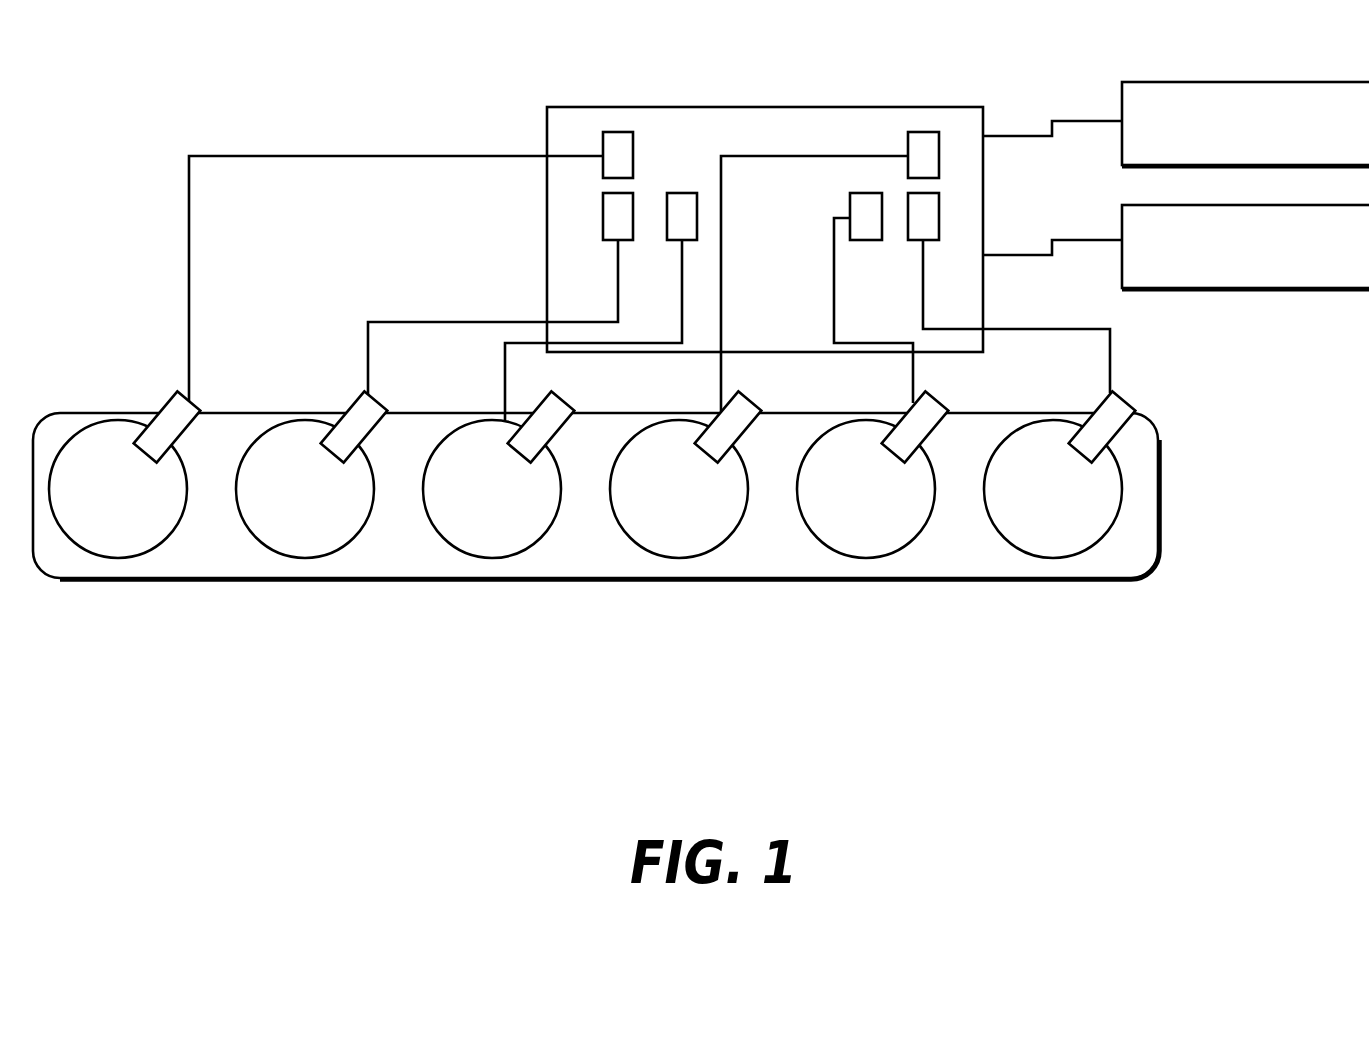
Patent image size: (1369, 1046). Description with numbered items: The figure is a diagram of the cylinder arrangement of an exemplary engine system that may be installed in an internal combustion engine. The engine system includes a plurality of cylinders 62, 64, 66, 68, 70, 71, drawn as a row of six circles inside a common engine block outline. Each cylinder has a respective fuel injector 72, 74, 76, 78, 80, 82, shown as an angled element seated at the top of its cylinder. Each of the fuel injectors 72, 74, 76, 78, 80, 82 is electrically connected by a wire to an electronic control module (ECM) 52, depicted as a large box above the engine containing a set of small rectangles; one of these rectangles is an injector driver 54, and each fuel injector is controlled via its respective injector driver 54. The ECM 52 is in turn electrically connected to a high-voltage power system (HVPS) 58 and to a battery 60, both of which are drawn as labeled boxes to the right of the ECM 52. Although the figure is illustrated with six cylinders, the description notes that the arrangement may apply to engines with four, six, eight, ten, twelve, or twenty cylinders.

The electronic control module 52 is at (813, 341).
The injector driver 54 is at (632, 124).
The high-voltage power system 58 is at (1285, 132).
The battery 60 is at (1282, 256).
The cylinder 62 is at (130, 502).
The cylinder 64 is at (317, 502).
The cylinder 66 is at (504, 502).
The cylinder 68 is at (691, 502).
The cylinder 70 is at (878, 502).
The cylinder 71 is at (1065, 502).
The fuel injector 72 is at (200, 410).
The fuel injector 74 is at (387, 410).
The fuel injector 76 is at (574, 410).
The fuel injector 78 is at (761, 410).
The fuel injector 80 is at (948, 410).
The fuel injector 82 is at (1135, 410).